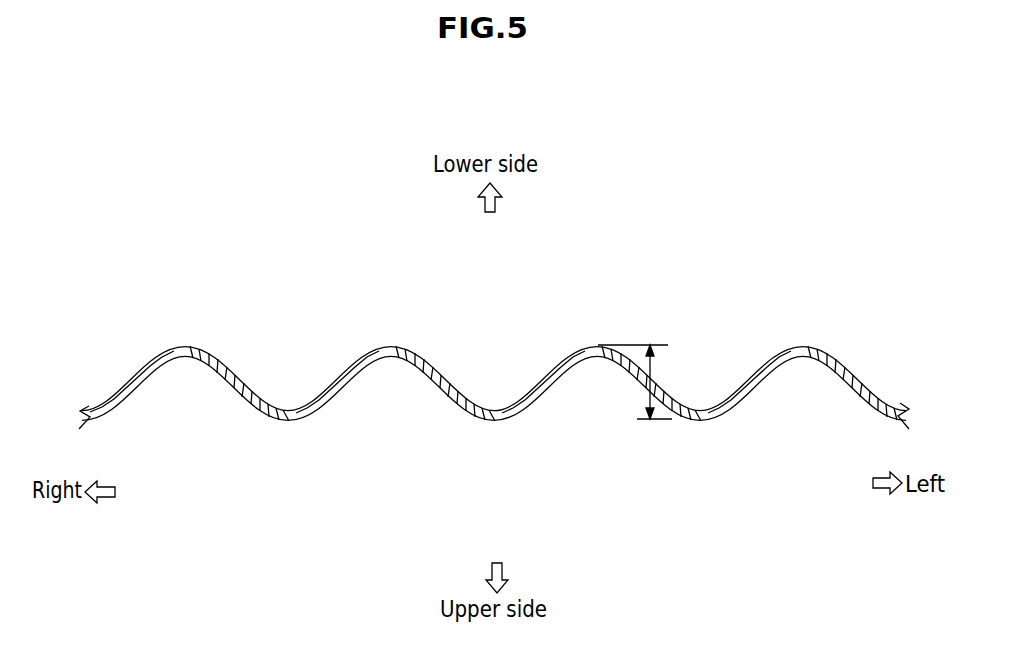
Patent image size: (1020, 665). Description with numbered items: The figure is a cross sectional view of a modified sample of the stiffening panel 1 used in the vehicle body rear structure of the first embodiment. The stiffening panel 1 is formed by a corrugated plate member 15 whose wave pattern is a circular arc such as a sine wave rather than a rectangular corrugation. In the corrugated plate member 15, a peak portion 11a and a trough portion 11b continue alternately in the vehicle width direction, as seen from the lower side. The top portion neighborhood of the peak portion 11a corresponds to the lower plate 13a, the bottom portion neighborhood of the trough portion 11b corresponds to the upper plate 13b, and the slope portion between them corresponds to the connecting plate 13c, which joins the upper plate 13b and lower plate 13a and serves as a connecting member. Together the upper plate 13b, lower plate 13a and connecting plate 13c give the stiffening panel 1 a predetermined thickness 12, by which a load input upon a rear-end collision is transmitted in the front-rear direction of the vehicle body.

The stiffening panel 1 is at (612, 290).
The peak portion 11a is at (185, 344).
The trough portion 11b is at (288, 406).
The thickness 12 is at (658, 363).
The lower plate 13a is at (393, 346).
The upper plate 13b is at (499, 422).
The connecting plate 13c is at (430, 380).
The corrugated plate member 15 is at (841, 362).